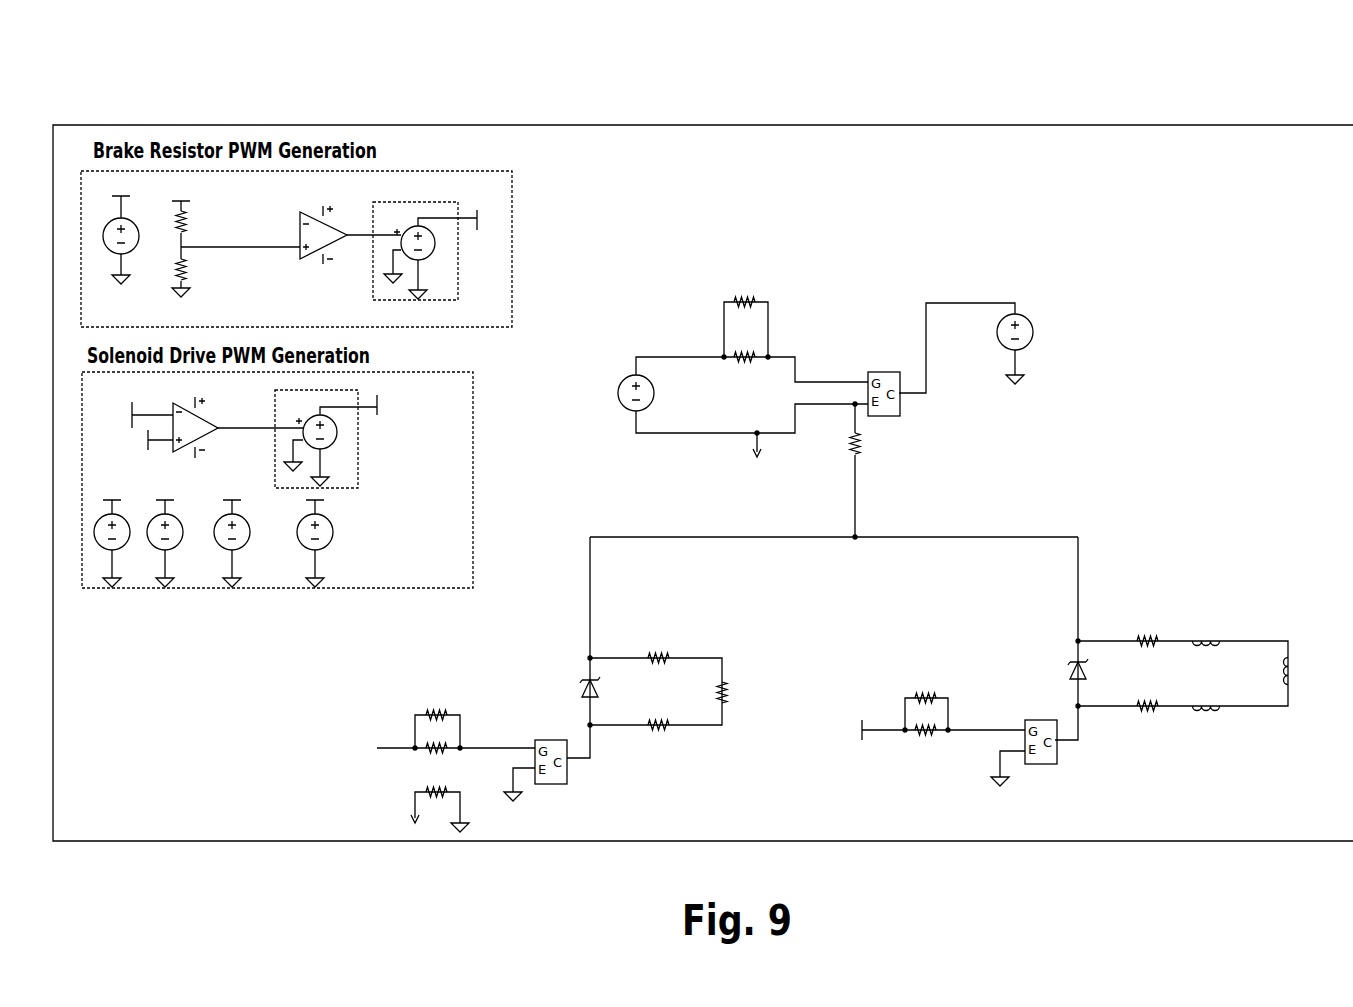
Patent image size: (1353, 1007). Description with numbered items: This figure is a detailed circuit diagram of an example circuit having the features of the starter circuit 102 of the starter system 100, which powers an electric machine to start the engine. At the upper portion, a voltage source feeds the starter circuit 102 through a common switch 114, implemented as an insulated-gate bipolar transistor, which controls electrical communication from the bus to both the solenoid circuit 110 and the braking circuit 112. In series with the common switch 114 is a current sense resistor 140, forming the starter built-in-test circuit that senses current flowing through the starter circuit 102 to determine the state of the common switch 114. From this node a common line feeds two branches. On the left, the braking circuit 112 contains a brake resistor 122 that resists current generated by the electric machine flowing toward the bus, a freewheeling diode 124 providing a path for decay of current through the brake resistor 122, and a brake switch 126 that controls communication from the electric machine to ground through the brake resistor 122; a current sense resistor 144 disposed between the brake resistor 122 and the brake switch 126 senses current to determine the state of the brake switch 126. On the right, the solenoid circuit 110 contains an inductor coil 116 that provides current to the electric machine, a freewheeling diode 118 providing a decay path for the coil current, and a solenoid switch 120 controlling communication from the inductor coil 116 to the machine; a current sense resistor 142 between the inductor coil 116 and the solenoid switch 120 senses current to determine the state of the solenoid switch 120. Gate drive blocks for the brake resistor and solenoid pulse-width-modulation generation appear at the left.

The starter system 100 is at (121, 108).
The starter circuit 102 is at (672, 452).
The solenoid circuit 110 is at (1204, 688).
The braking circuit 112 is at (677, 703).
The common switch 114 is at (885, 372).
The inductor coil 116 is at (1290, 655).
The freewheeling diode 118 is at (1070, 661).
The solenoid switch 120 is at (1042, 720).
The brake resistor 122 is at (724, 684).
The freewheeling diode 124 is at (582, 678).
The brake switch 126 is at (553, 740).
The current sense resistor 140 is at (857, 455).
The current sense resistor 142 is at (1143, 638).
The current sense resistor 144 is at (652, 656).